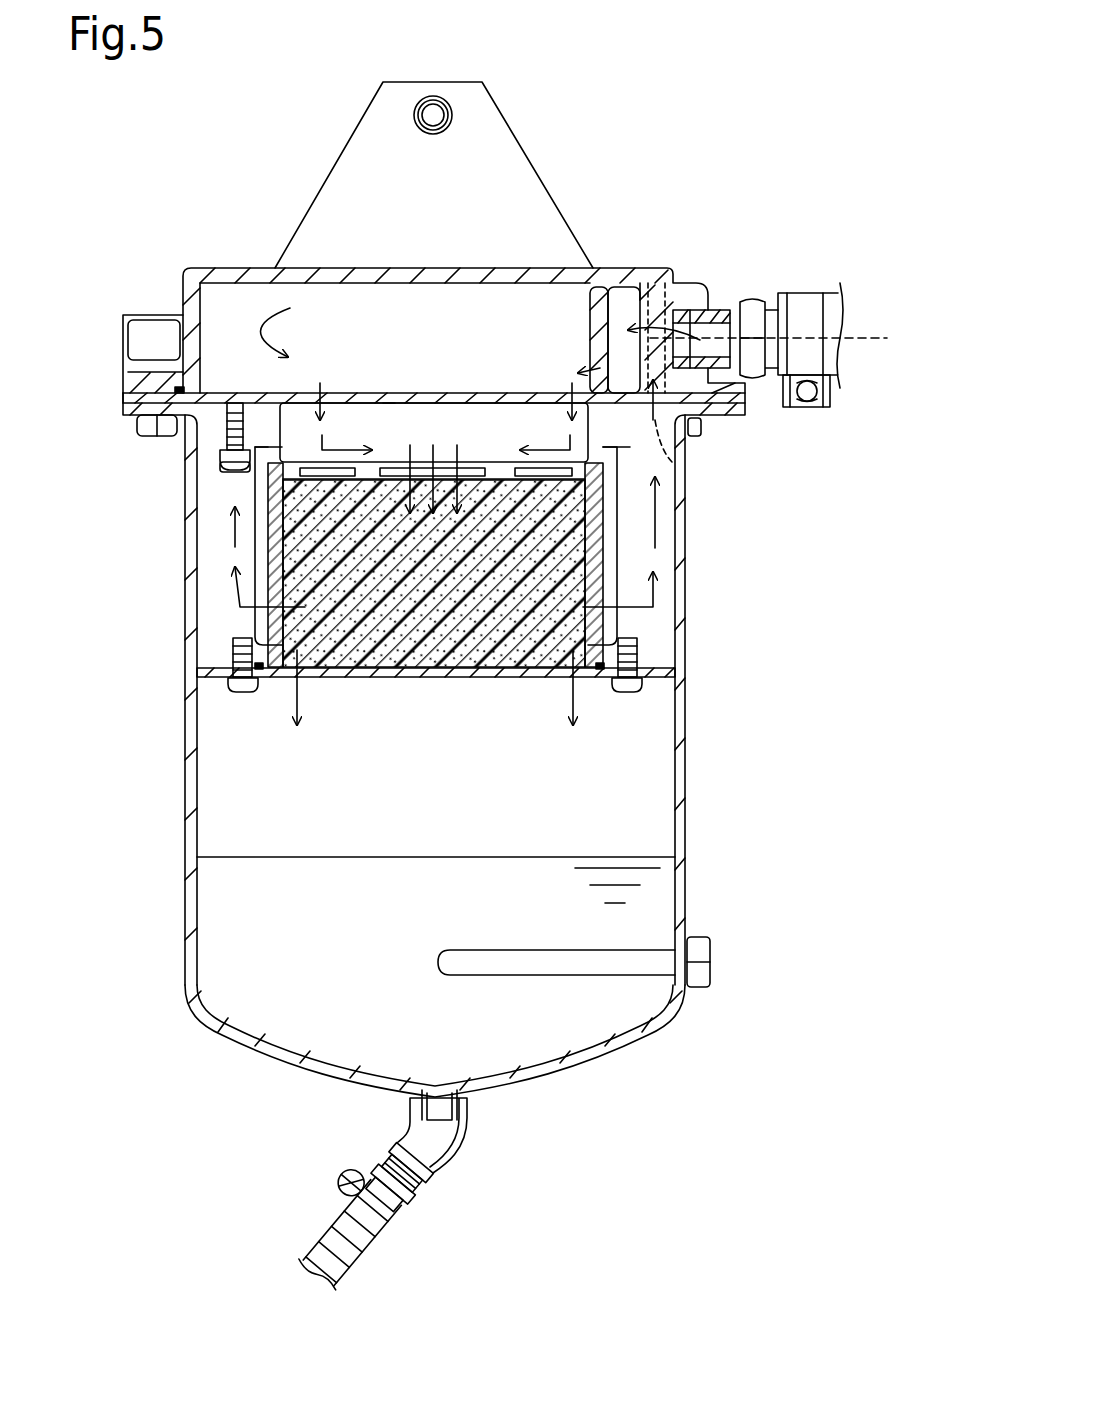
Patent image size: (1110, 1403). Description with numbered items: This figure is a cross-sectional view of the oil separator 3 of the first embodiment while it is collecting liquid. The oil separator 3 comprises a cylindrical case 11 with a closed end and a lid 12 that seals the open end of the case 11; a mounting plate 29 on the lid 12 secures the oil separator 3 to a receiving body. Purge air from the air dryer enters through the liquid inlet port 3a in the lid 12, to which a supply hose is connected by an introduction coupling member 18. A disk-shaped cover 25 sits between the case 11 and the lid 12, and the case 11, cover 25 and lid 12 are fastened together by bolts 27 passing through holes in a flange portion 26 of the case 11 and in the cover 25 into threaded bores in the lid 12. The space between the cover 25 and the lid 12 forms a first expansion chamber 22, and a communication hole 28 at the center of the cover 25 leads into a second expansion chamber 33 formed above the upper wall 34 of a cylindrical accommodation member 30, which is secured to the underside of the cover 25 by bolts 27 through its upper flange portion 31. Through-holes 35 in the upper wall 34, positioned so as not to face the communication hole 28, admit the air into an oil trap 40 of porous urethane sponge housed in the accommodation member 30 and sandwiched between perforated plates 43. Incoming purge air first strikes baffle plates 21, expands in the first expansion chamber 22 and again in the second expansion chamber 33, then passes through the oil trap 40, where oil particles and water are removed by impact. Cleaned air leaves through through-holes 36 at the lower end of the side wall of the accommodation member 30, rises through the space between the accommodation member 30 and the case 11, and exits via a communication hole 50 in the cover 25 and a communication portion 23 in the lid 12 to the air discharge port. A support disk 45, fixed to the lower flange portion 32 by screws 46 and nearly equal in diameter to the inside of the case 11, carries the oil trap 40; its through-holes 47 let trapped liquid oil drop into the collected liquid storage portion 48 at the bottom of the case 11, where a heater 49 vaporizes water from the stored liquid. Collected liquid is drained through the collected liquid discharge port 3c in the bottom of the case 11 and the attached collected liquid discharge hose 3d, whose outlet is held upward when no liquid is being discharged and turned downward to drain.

The oil separator 3 is at (80, 238).
The liquid inlet port 3a is at (721, 310).
The collected liquid discharge port 3c is at (455, 1160).
The collected liquid discharge hose 3d is at (377, 1238).
The case 11 is at (685, 812).
The lid 12 is at (183, 296).
The introduction coupling member 18 is at (782, 300).
The baffle plates 21 is at (600, 318).
The first expansion chamber 22 is at (425, 300).
The communication portion 23 is at (643, 380).
The cover 25 is at (400, 393).
The flange portion 26 is at (125, 410).
The bolts 27 is at (150, 436).
The communication hole 28 is at (317, 378).
The mounting plate 29 is at (518, 150).
The accommodation member 30 is at (255, 555).
The flange portion 31 is at (222, 458).
The flange portion 32 is at (228, 660).
The second expansion chamber 33 is at (372, 428).
The upper wall 34 is at (434, 432).
The through-holes 35 is at (448, 462).
The through-holes 36 is at (265, 628).
The oil trap 40 is at (625, 555).
The plates 43 is at (495, 470).
The support disk 45 is at (430, 678).
The screws 46 is at (245, 694).
The through-holes 47 is at (300, 690).
The collected liquid storage portion 48 is at (212, 813).
The heater 49 is at (478, 950).
The communication hole 50 is at (686, 459).